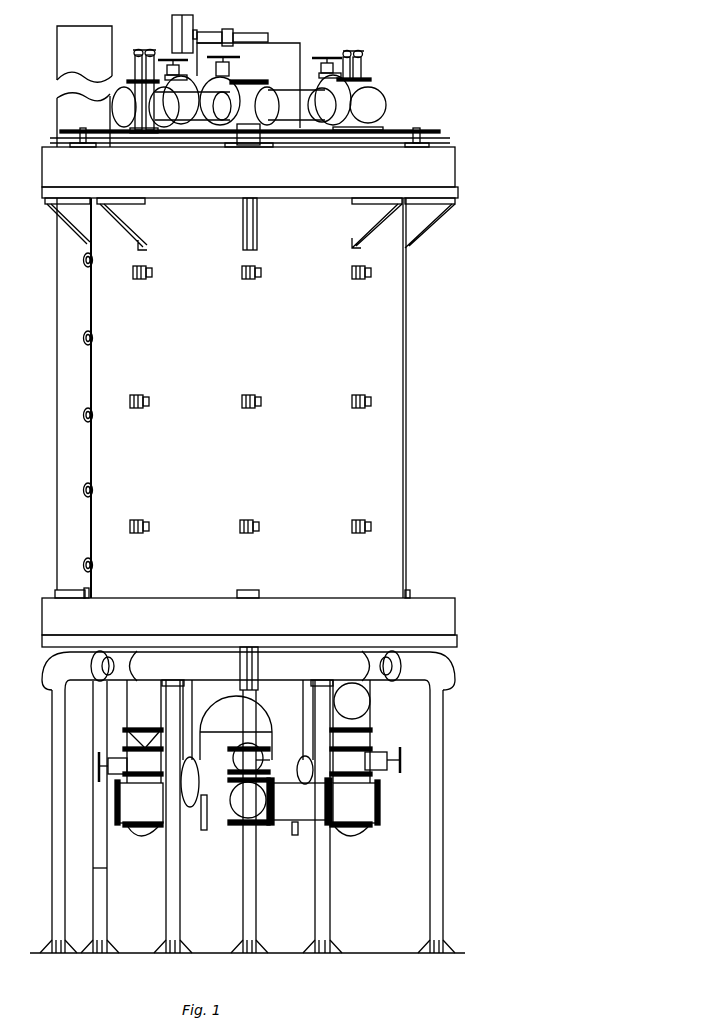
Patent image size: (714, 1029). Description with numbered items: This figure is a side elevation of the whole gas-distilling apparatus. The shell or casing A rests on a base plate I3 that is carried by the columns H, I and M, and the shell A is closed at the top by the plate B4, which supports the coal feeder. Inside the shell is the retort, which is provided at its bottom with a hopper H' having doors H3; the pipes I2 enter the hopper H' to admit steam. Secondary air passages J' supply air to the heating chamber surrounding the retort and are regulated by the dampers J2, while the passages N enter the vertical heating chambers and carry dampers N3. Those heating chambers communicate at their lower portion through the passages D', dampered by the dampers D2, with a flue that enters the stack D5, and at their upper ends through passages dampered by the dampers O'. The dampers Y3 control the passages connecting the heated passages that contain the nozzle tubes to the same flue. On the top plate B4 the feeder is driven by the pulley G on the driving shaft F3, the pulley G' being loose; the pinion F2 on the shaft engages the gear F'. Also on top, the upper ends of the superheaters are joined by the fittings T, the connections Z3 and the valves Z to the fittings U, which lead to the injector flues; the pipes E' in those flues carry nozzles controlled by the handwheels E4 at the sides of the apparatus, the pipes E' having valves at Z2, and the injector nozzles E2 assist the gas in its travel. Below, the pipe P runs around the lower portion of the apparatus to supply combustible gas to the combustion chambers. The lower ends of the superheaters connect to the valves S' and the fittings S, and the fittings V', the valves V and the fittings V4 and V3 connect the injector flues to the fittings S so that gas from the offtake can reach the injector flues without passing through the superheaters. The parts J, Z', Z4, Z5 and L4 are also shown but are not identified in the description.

The shell A is at (248, 398).
The stack D5 is at (84, 308).
The dampers D2 is at (80, 135).
The passages D' is at (262, 581).
The handwheels E4 is at (84, 264).
The bracket J is at (250, 224).
The secondary air passages J' is at (234, 399).
The dampers J2 is at (152, 277).
The passages N is at (244, 280).
The dampers N3 is at (259, 278).
The base plate I3 is at (453, 640).
The plate B4 is at (398, 130).
The dampers O' is at (249, 153).
The loose pulley G' is at (172, 28).
The pulley G is at (200, 19).
The driving shaft F3 is at (221, 28).
The pinion F2 is at (234, 33).
The gear F' is at (248, 72).
The rod cap Z' is at (242, 33).
The valves Z2 is at (136, 52).
The pipes E' is at (253, 110).
The injector nozzles E2 is at (150, 95).
The valves Z is at (253, 77).
The valve Z5 is at (230, 70).
The fittings T is at (254, 102).
The pipe Z4 is at (171, 107).
The connections Z3 is at (302, 105).
The fittings U is at (372, 94).
The pipe P is at (248, 670).
The column I is at (247, 800).
The column H is at (248, 816).
The valve casing L4 is at (139, 758).
The valves V is at (249, 764).
The fittings V' is at (351, 731).
The fittings V4 is at (355, 808).
The fittings V3 is at (299, 801).
The hopper H' is at (248, 720).
The doors H3 is at (198, 776).
The valves S' is at (256, 754).
The fittings S is at (258, 793).
The dampers Y3 is at (278, 745).
The pipes I2 is at (204, 832).
The column M is at (70, 866).